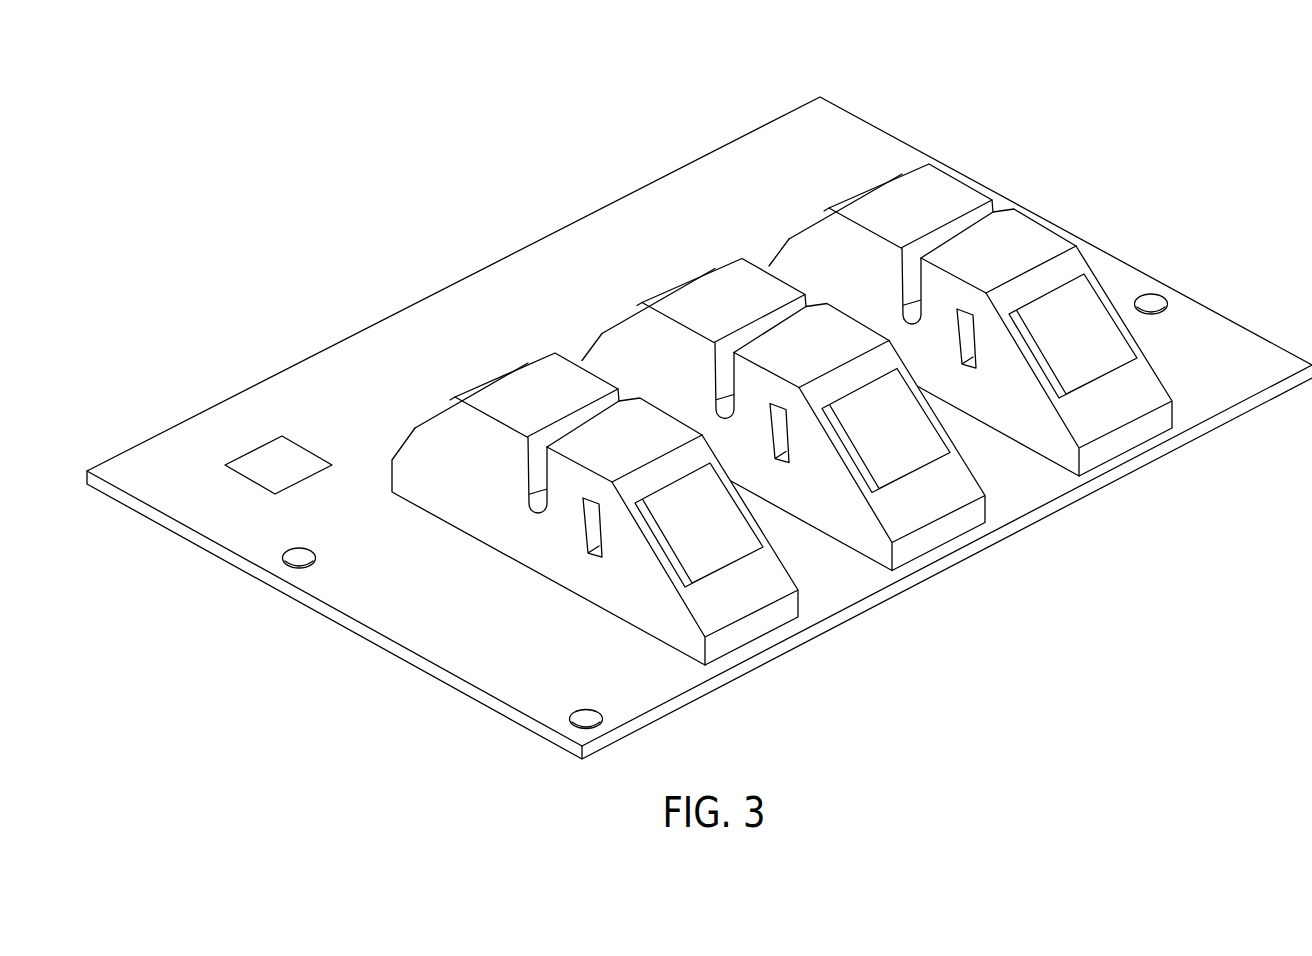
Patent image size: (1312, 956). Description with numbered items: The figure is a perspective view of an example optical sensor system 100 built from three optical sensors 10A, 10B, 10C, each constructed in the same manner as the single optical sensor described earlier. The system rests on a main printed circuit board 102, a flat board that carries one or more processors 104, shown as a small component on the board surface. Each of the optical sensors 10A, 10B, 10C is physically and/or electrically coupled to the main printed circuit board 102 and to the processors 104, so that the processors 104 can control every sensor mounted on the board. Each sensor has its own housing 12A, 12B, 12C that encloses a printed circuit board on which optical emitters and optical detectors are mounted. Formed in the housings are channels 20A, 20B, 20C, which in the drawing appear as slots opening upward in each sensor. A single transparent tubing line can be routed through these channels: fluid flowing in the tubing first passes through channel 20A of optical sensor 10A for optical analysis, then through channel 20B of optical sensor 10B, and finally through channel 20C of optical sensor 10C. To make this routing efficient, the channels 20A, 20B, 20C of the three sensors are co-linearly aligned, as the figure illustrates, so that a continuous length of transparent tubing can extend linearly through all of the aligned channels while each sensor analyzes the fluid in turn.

The optical sensor system 100 is at (1150, 110).
The main printed circuit board 102 is at (1237, 353).
The processor 104 is at (254, 448).
The optical sensor 10A is at (542, 460).
The optical sensor 10B is at (731, 367).
The optical sensor 10C is at (920, 267).
The housing 12A is at (605, 457).
The housing 12B is at (787, 350).
The housing 12C is at (1020, 240).
The channel 20A is at (520, 484).
The channel 20B is at (701, 388).
The channel 20C is at (889, 291).